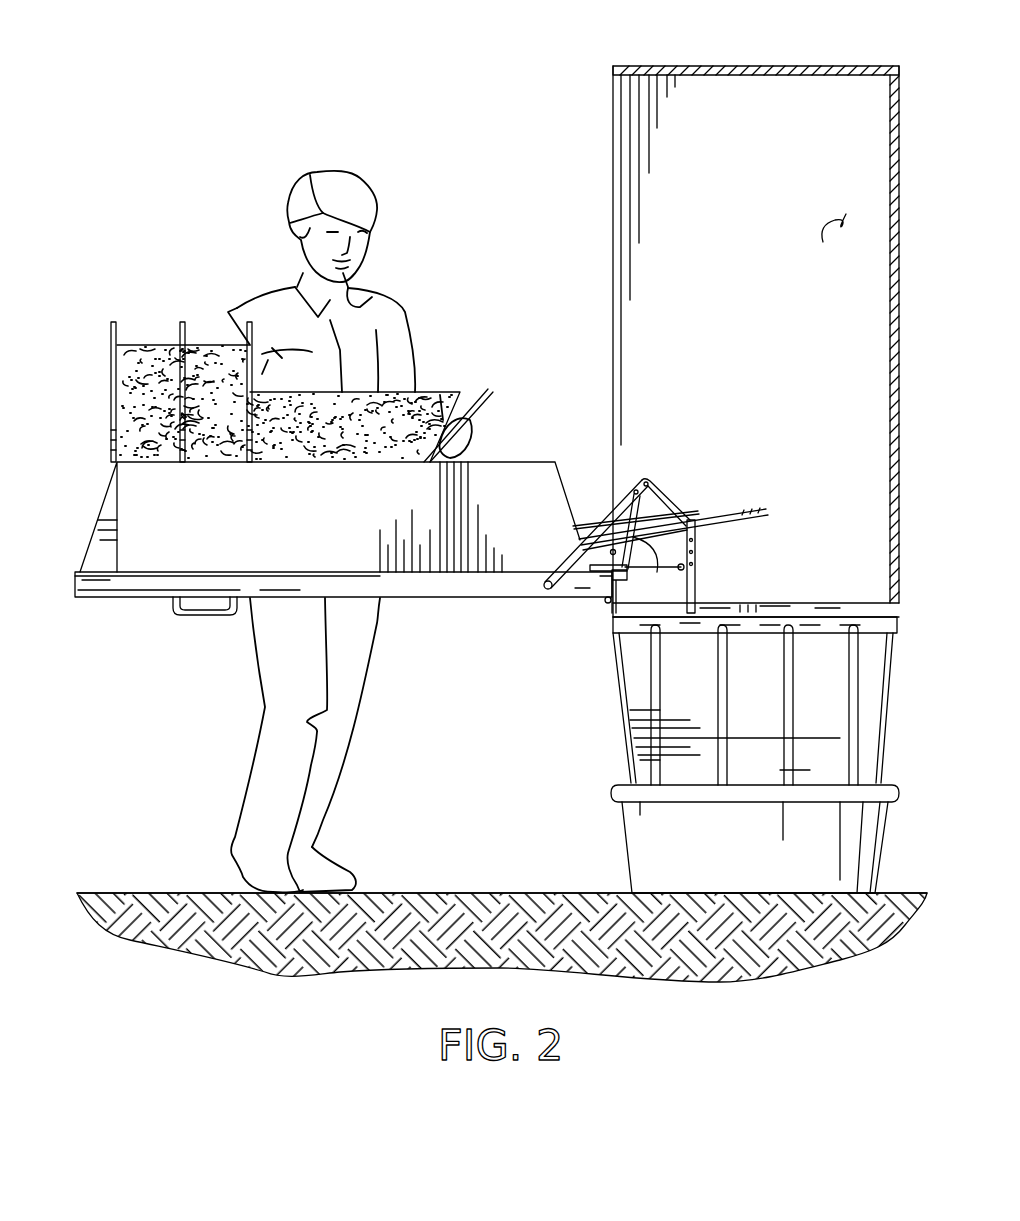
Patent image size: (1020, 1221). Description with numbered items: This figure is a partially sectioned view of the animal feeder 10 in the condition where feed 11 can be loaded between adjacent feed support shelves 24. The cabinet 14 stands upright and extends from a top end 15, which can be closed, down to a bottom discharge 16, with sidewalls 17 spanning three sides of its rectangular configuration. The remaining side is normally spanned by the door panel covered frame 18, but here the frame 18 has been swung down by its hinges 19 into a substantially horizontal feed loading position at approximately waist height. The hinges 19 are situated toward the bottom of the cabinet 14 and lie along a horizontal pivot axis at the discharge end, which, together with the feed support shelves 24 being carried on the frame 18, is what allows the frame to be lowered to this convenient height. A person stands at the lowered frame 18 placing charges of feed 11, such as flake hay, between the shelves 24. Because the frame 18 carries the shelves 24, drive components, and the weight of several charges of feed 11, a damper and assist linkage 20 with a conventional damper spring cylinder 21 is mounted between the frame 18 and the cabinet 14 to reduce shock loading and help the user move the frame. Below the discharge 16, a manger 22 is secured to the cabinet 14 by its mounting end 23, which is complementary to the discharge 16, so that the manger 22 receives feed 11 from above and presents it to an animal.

The animal feeder 10 is at (532, 133).
The feed 11 is at (140, 400).
The cabinet 14 is at (604, 228).
The top end 15 is at (720, 68).
The bottom discharge 16 is at (718, 716).
The sidewalls 17 is at (890, 264).
The door panel covered frame 18 is at (444, 601).
The hinges 19 is at (605, 602).
The damper and assist linkage 20 is at (651, 541).
The damper spring cylinder 21 is at (670, 566).
The manger 22 is at (612, 718).
The mounting end 23 is at (752, 630).
The feed support shelves 24 is at (242, 330).